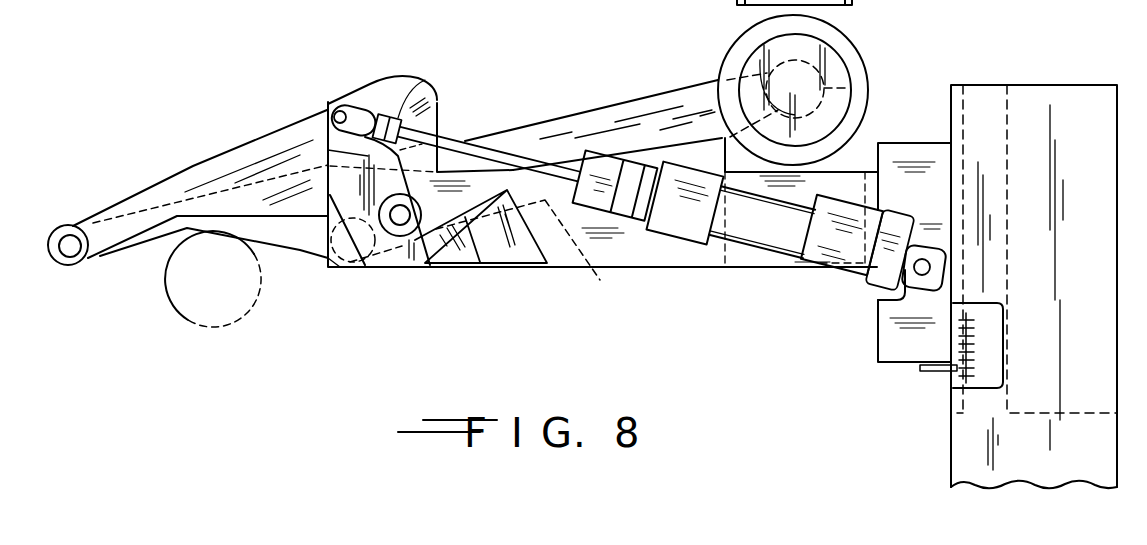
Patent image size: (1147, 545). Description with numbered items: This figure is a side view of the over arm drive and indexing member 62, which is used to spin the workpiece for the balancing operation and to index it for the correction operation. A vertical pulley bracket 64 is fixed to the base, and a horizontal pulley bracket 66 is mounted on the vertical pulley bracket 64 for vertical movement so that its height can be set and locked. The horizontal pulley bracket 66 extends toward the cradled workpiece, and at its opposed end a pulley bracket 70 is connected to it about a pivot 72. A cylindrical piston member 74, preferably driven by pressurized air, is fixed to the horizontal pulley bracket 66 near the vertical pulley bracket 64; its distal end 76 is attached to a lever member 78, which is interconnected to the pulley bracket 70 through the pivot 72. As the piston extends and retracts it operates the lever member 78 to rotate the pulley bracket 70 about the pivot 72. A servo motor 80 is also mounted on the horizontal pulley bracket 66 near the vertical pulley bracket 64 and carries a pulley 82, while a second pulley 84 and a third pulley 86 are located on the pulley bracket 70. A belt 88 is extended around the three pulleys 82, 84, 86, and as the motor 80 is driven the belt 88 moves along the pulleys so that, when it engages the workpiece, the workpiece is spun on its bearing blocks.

The over arm drive and indexing member 62 is at (546, 269).
The vertical pulley bracket 64 is at (1073, 100).
The horizontal pulley bracket 66 is at (890, 338).
The pulley bracket 70 is at (267, 133).
The pivot 72 is at (401, 226).
The cylindrical piston member 74 is at (763, 232).
The distal end of the piston 76 is at (437, 92).
The lever member 78 is at (392, 258).
The servo motor 80 is at (843, 46).
The pulley 82 is at (845, 88).
The second pulley 84 is at (333, 262).
The third pulley 86 is at (58, 268).
The belt 88 is at (625, 102).